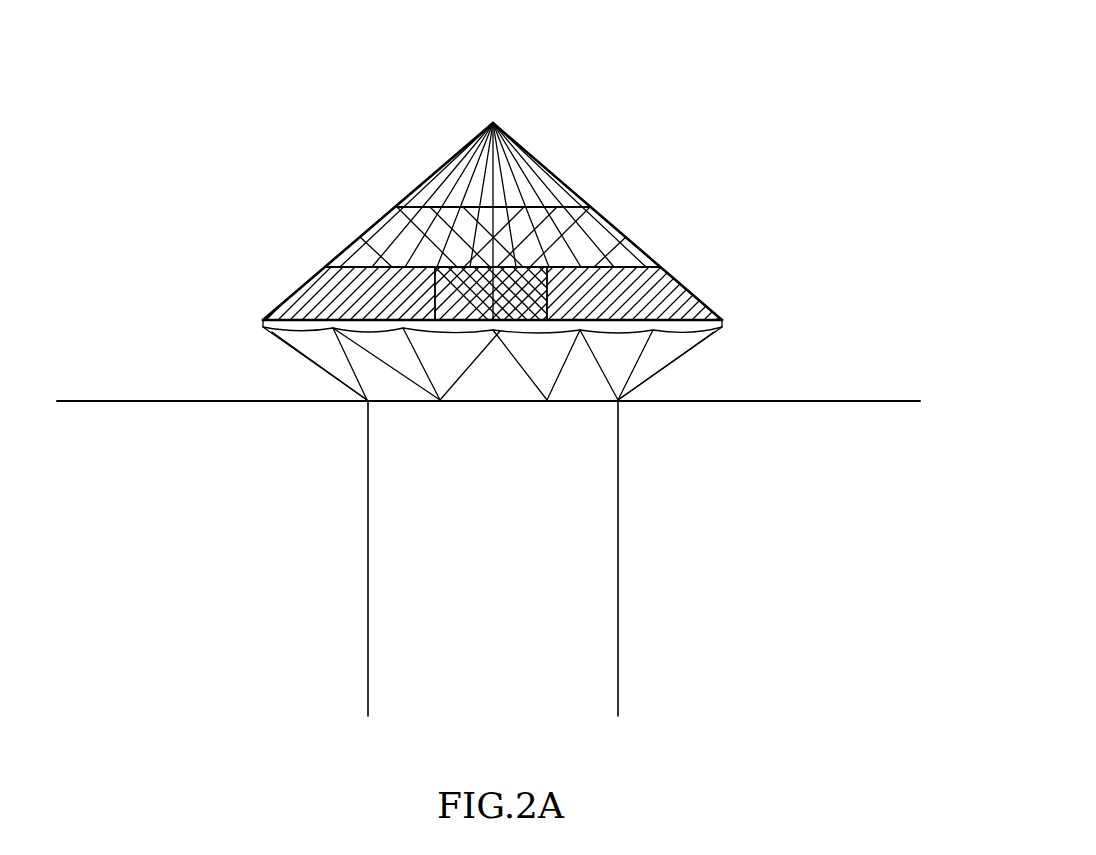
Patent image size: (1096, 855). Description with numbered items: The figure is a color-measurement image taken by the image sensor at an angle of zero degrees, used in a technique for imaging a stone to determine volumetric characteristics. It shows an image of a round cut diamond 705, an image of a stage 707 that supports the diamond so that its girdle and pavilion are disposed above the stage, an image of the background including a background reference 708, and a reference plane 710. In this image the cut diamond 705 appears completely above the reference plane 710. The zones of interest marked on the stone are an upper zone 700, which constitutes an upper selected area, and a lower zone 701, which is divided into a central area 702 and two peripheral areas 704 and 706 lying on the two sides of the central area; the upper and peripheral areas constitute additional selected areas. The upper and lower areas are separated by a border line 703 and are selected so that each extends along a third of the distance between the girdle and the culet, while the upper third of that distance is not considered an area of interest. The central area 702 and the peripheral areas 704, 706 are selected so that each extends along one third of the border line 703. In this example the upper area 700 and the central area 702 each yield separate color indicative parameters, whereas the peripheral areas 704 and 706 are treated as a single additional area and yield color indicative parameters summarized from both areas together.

The background reference 708 is at (145, 95).
The round cut diamond 705 is at (518, 114).
The upper zone 700 is at (600, 213).
The border line 703 is at (428, 258).
The peripheral area 704 is at (665, 292).
The peripheral area 706 is at (340, 304).
The central area 702 is at (520, 318).
The lower zone 701 is at (497, 357).
The reference plane 710 is at (255, 399).
The stage 707 is at (392, 488).